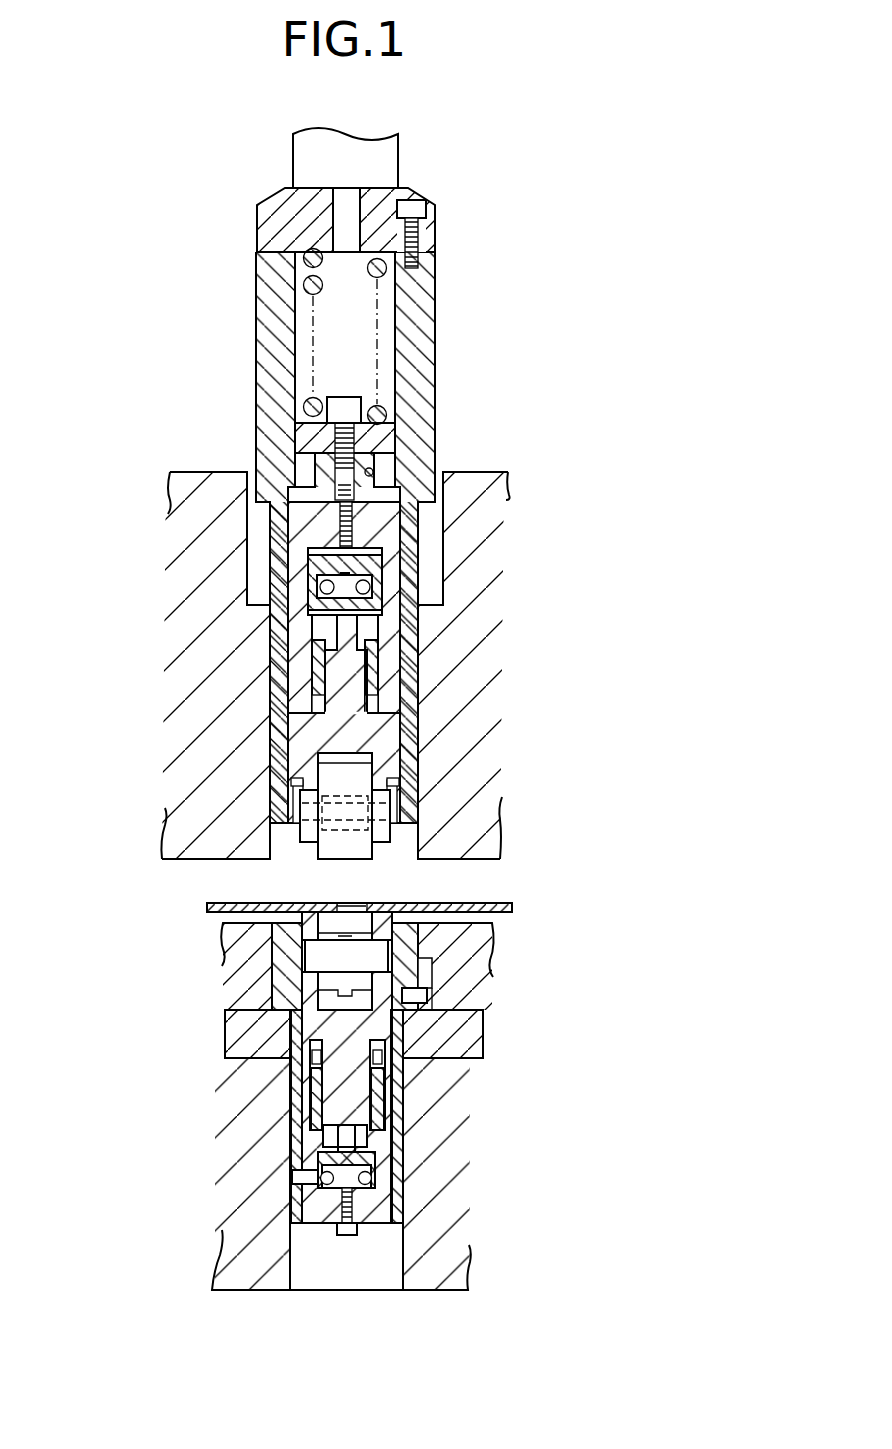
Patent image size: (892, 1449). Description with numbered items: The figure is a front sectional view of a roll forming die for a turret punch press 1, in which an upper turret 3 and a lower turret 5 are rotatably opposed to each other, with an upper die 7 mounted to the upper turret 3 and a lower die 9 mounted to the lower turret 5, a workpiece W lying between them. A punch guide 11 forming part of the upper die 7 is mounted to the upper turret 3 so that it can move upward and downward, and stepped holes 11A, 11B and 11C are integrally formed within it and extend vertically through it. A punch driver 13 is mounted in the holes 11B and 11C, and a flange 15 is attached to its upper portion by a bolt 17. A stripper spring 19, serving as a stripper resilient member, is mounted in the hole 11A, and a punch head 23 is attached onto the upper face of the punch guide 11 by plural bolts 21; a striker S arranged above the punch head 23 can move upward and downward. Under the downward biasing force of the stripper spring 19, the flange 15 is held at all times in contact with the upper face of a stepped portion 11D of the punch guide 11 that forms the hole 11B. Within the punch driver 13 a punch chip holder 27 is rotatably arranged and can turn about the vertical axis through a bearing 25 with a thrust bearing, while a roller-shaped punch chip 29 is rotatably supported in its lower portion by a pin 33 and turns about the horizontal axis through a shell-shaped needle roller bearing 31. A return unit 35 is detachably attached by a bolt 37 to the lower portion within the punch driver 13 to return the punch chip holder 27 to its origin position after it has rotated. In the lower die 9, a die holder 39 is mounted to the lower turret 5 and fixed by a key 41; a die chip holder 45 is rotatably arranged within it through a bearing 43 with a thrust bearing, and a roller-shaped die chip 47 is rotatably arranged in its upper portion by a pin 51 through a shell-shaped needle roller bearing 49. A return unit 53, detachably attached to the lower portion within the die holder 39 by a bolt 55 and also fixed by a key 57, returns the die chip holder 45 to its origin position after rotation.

The striker S is at (385, 147).
The turret punch press 1 is at (88, 712).
The upper turret 3 is at (192, 632).
The lower turret 5 is at (242, 1118).
The upper die 7 is at (505, 405).
The lower die 9 is at (160, 955).
The punch guide 11 is at (272, 400).
The hole 11A is at (393, 337).
The hole 11B is at (400, 457).
The hole 11C is at (404, 657).
The stepped portion 11D is at (290, 484).
The punch driver 13 is at (385, 540).
The flange 15 is at (300, 445).
The bolt 17 is at (365, 400).
The stripper spring 19 is at (313, 285).
The bolts 21 is at (418, 210).
The punch head 23 is at (275, 228).
The bearing 25 is at (310, 697).
The punch chip holder 27 is at (385, 749).
The punch chip 29 is at (333, 856).
The needle roller bearing 31 is at (330, 784).
The pin 33 is at (380, 835).
The return unit 35 is at (390, 585).
The bolt 37 is at (340, 525).
The die holder 39 is at (387, 1118).
The key 41 is at (412, 996).
The bearing 43 is at (310, 1076).
The die chip holder 45 is at (383, 1036).
The die chip 47 is at (357, 909).
The needle roller bearing 49 is at (325, 986).
The pin 51 is at (375, 956).
The return unit 53 is at (390, 1168).
The bolt 55 is at (347, 1237).
The key 57 is at (308, 1181).
The workpiece W is at (482, 907).